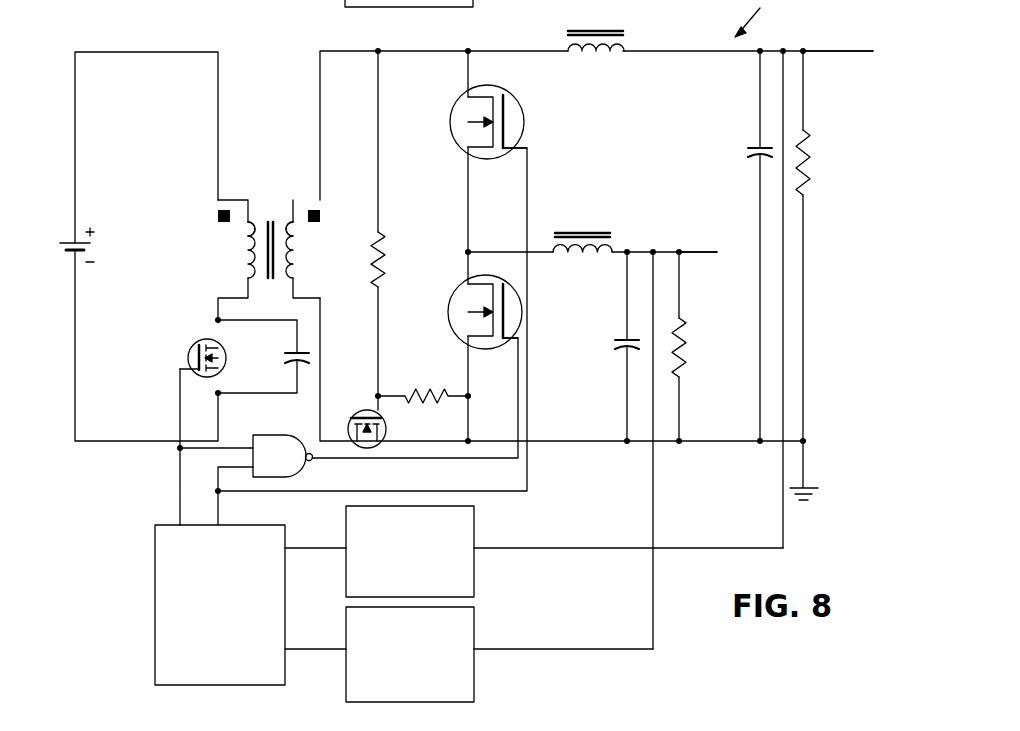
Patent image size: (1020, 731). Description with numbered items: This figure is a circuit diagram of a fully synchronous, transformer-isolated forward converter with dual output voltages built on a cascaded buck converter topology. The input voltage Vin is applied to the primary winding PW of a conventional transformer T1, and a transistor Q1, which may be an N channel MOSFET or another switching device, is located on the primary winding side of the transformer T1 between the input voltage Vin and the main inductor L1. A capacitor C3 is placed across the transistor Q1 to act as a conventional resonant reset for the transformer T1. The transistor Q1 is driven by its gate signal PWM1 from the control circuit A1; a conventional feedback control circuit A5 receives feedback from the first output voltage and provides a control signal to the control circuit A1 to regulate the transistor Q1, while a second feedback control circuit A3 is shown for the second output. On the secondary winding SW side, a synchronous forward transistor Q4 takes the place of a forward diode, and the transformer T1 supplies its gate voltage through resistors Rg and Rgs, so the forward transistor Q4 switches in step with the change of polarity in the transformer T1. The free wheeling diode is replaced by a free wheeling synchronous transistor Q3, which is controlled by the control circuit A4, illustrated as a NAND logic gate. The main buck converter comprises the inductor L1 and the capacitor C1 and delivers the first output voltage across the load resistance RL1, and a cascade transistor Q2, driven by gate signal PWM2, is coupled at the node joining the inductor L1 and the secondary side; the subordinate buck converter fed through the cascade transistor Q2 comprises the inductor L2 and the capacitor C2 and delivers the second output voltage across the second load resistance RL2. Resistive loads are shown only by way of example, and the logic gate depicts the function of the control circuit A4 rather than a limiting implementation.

The input voltage Vin is at (97, 245).
The transformer T1 is at (269, 251).
The primary winding PW is at (231, 198).
The secondary winding SW is at (313, 198).
The transistor Q1 is at (224, 364).
The first PWM gate signal PWM1 is at (163, 348).
The capacitor C3 is at (263, 356).
The resistor Rg is at (396, 259).
The resistor Rgs is at (423, 382).
The cascade transistor Q2 is at (468, 122).
The second PWM gate signal PWM2 is at (550, 161).
The synchronous transistor Q3 is at (469, 312).
The synchronous forward transistor Q4 is at (356, 419).
The control circuit A4 is at (283, 456).
The inductor L1 is at (596, 59).
The inductor L2 is at (582, 260).
The capacitor C1 is at (741, 155).
The capacitor C2 is at (609, 349).
The load resistance RL1 is at (828, 162).
The second load resistance RL2 is at (703, 347).
The control circuit A1 is at (220, 605).
The feedback control circuit A5 is at (410, 551).
The feedback control circuit A3 is at (410, 654).